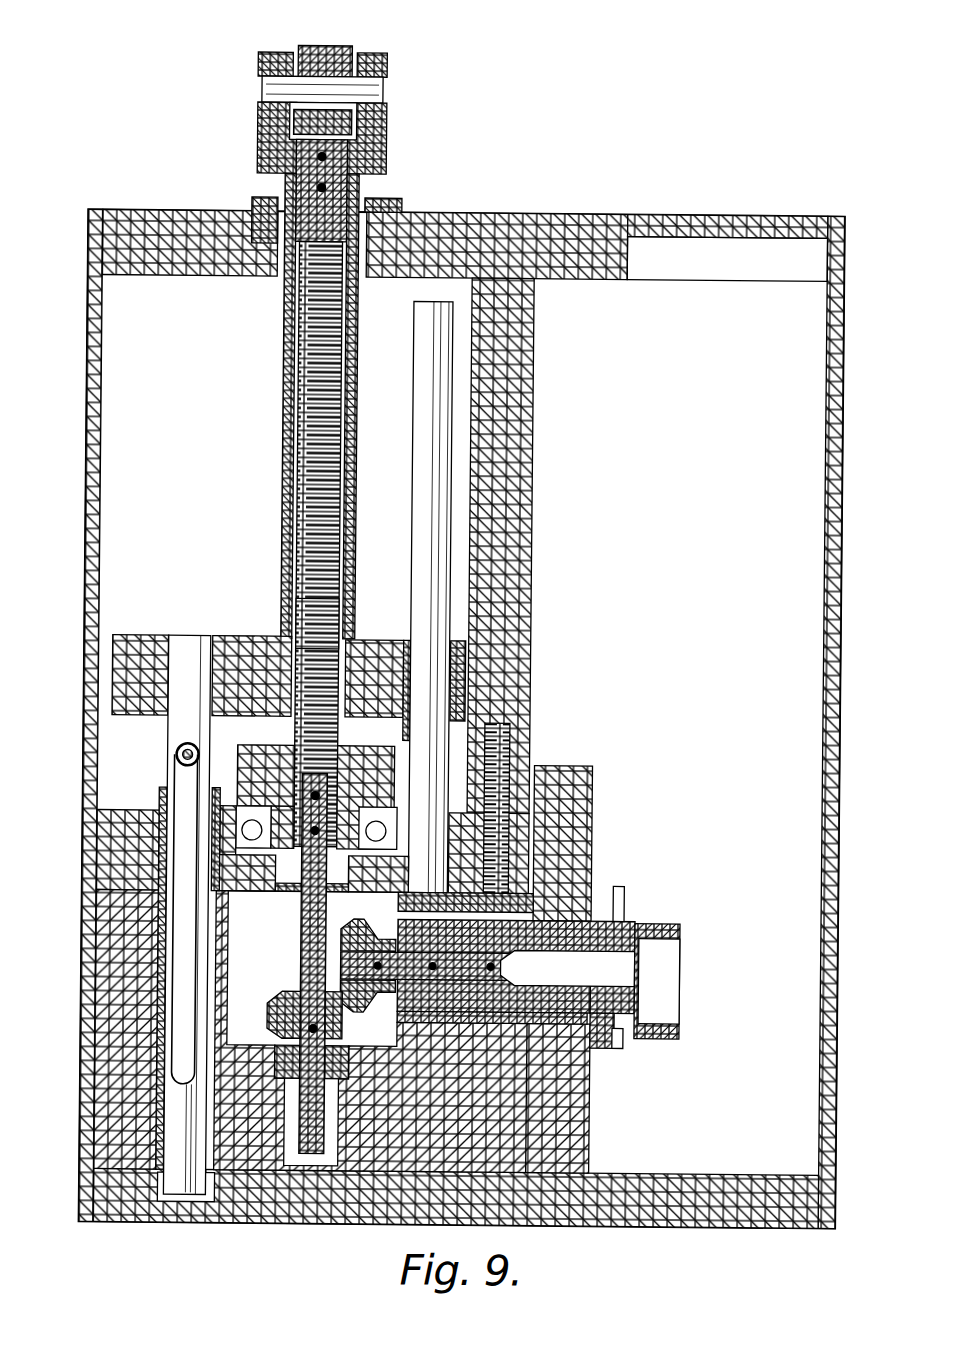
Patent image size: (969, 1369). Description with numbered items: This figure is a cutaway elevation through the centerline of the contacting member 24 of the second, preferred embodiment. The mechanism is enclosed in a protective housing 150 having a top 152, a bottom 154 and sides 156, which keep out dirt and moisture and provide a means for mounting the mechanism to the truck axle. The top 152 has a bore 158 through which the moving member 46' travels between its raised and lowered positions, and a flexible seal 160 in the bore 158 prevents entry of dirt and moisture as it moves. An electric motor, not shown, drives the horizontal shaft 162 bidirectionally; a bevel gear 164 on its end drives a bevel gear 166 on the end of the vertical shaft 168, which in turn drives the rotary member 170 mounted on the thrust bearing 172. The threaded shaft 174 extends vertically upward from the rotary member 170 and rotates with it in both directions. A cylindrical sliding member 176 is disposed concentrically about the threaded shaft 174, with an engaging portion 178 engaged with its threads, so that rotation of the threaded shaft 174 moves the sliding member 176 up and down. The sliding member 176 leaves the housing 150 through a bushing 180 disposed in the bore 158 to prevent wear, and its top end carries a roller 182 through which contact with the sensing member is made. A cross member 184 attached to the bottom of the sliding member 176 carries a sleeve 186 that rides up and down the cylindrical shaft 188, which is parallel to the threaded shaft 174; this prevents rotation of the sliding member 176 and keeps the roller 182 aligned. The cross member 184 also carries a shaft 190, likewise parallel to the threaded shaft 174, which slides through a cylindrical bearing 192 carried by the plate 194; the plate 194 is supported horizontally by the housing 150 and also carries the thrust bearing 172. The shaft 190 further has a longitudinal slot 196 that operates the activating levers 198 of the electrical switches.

The contacting member 24 is at (572, 127).
The moving member 46' is at (388, 189).
The protective housing 150 is at (735, 197).
The top 152 is at (577, 211).
The bottom 154 is at (723, 1203).
The sides 156 is at (100, 473).
The bore 158 is at (264, 275).
The flexible seal 160 is at (400, 205).
The horizontal shaft 162 is at (652, 983).
The bevel gear 164 is at (352, 936).
The bevel gear 166 is at (292, 1000).
The vertical shaft 168 is at (307, 937).
The rotary member 170 is at (272, 754).
The thrust bearing 172 is at (254, 857).
The threaded shaft 174 is at (317, 557).
The cylindrical sliding member 176 is at (287, 378).
The engaging portion 178 is at (297, 630).
The bushing 180 is at (351, 281).
The roller 182 is at (374, 46).
The cross member 184 is at (124, 651).
The sleeve 186 is at (462, 672).
The cylindrical shaft 188 is at (452, 468).
The shaft 190 is at (195, 1188).
The cylindrical bearing 192 is at (133, 838).
The plate 194 is at (164, 803).
The longitudinal slot 196 is at (187, 968).
The activating levers 198 is at (182, 759).